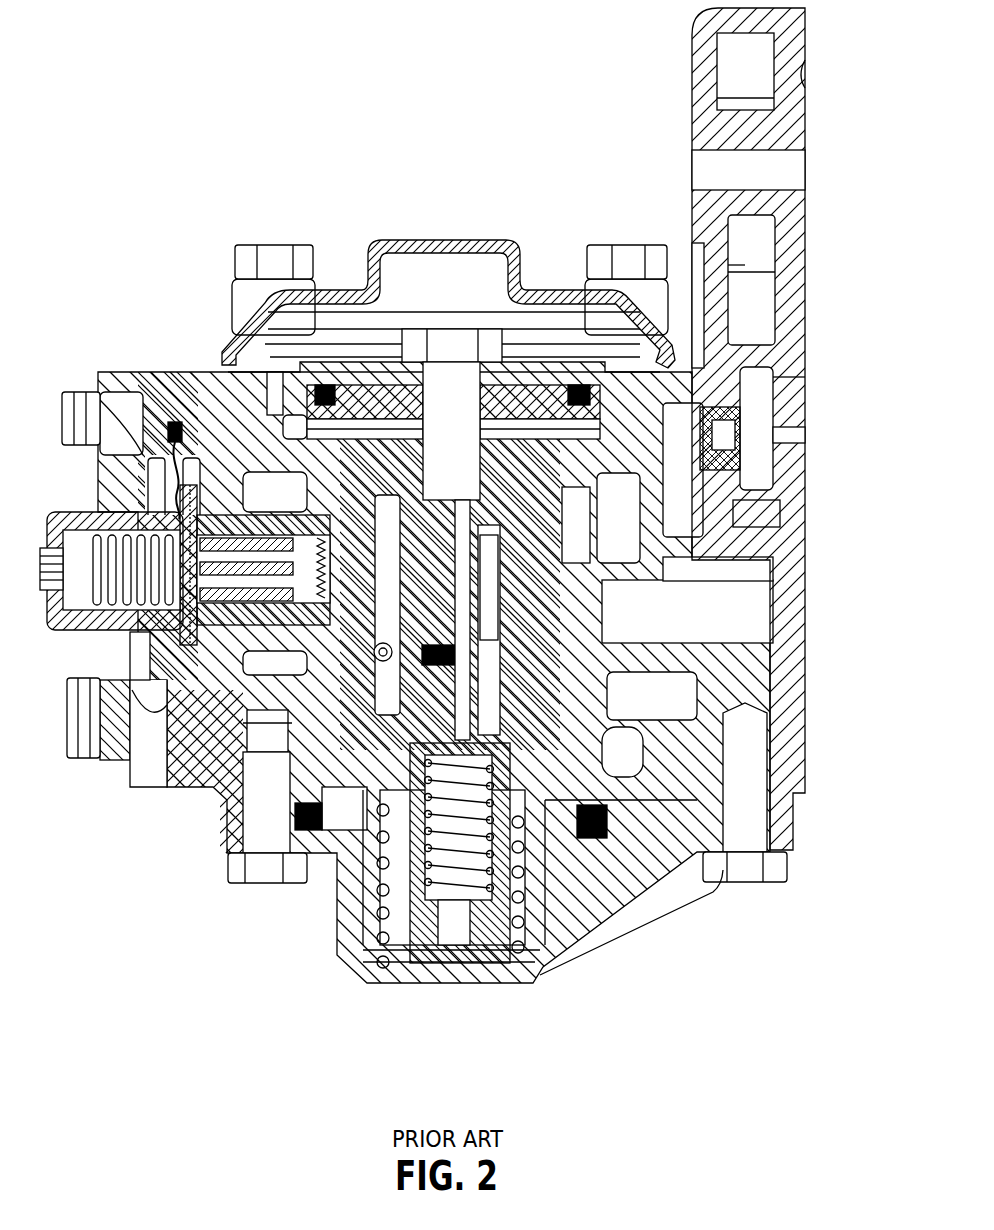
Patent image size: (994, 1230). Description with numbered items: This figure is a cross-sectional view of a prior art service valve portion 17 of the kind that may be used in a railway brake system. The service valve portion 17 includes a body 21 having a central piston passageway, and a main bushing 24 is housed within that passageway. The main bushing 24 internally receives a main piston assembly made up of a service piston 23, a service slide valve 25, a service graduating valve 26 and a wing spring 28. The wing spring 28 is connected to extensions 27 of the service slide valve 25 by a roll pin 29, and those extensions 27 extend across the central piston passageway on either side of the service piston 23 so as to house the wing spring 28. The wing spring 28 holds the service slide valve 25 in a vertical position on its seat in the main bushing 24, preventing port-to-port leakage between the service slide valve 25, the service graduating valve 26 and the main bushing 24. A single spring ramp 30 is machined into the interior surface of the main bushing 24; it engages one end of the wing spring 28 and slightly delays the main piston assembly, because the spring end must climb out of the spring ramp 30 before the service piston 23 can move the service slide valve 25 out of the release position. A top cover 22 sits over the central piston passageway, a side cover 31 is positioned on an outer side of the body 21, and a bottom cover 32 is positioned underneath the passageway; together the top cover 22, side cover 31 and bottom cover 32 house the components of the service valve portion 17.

The service valve portion 17 is at (246, 156).
The body 21 is at (805, 255).
The top cover 22 is at (497, 240).
The service piston 23 is at (447, 537).
The main bushing 24 is at (293, 817).
The service slide valve 25 is at (630, 930).
The service graduating valve 26 is at (452, 760).
The extensions 27 is at (357, 740).
The wing spring 28 is at (383, 683).
The roll pin 29 is at (382, 652).
The spring ramp 30 is at (305, 545).
The side cover 31 is at (123, 495).
The bottom cover 32 is at (470, 975).